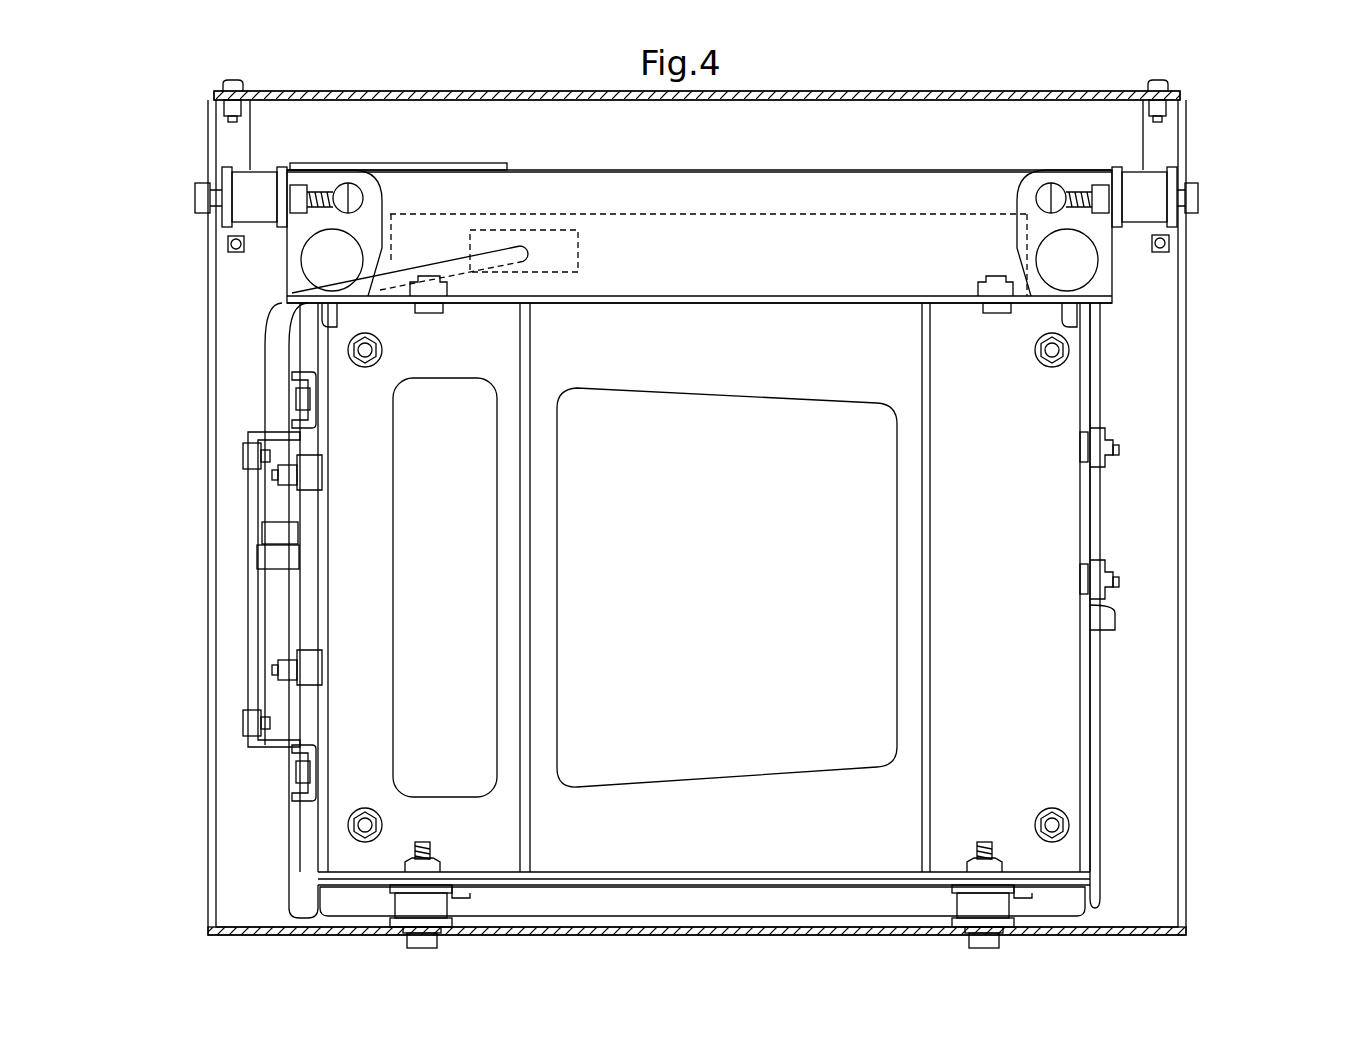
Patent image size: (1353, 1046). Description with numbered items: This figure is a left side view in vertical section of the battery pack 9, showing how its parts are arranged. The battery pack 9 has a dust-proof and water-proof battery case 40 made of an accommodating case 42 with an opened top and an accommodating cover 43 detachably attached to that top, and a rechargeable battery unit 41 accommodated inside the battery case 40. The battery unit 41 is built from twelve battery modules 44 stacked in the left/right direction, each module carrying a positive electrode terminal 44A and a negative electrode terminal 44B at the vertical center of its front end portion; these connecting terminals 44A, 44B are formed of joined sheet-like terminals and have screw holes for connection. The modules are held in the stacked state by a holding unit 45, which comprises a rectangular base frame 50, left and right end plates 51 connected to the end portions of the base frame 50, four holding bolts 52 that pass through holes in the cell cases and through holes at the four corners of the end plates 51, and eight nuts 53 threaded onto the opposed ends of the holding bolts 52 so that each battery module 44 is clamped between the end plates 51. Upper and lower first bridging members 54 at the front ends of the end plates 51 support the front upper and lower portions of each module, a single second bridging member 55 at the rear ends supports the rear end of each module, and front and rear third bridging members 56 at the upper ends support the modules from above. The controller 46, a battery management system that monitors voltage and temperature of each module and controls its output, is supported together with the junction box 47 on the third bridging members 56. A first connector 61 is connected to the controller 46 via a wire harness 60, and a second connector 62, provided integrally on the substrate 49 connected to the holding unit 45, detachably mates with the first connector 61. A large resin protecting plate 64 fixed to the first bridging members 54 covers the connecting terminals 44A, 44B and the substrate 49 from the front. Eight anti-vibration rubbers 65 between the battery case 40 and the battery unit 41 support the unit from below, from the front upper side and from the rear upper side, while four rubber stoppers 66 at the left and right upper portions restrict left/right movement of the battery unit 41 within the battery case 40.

The battery pack 9 is at (175, 127).
The battery case 40 is at (766, 507).
The battery unit 41 is at (615, 499).
The accommodating case 42 is at (1182, 345).
The accommodating cover 43 is at (818, 100).
The battery module 44 is at (750, 747).
The positive electrode terminal 44A is at (310, 668).
The negative electrode terminal 44B is at (310, 468).
The holding unit 45 is at (745, 292).
The controller 46 is at (690, 213).
The junction box 47 is at (622, 172).
The substrate 49 is at (290, 633).
The base frame 50 is at (330, 903).
The end plate 51 is at (325, 829).
The holding bolt 52 is at (380, 343).
The nut 53 is at (368, 368).
The first bridging member 54 is at (300, 402).
The second bridging member 55 is at (1095, 490).
The third bridging member 56 is at (430, 280).
The wire harness 60 is at (272, 340).
The first connector 61 is at (270, 532).
The second connector 62 is at (275, 557).
The protecting plate 64 is at (255, 470).
The anti-vibration rubber 65 is at (1163, 180).
The rubber stopper 66 is at (325, 255).